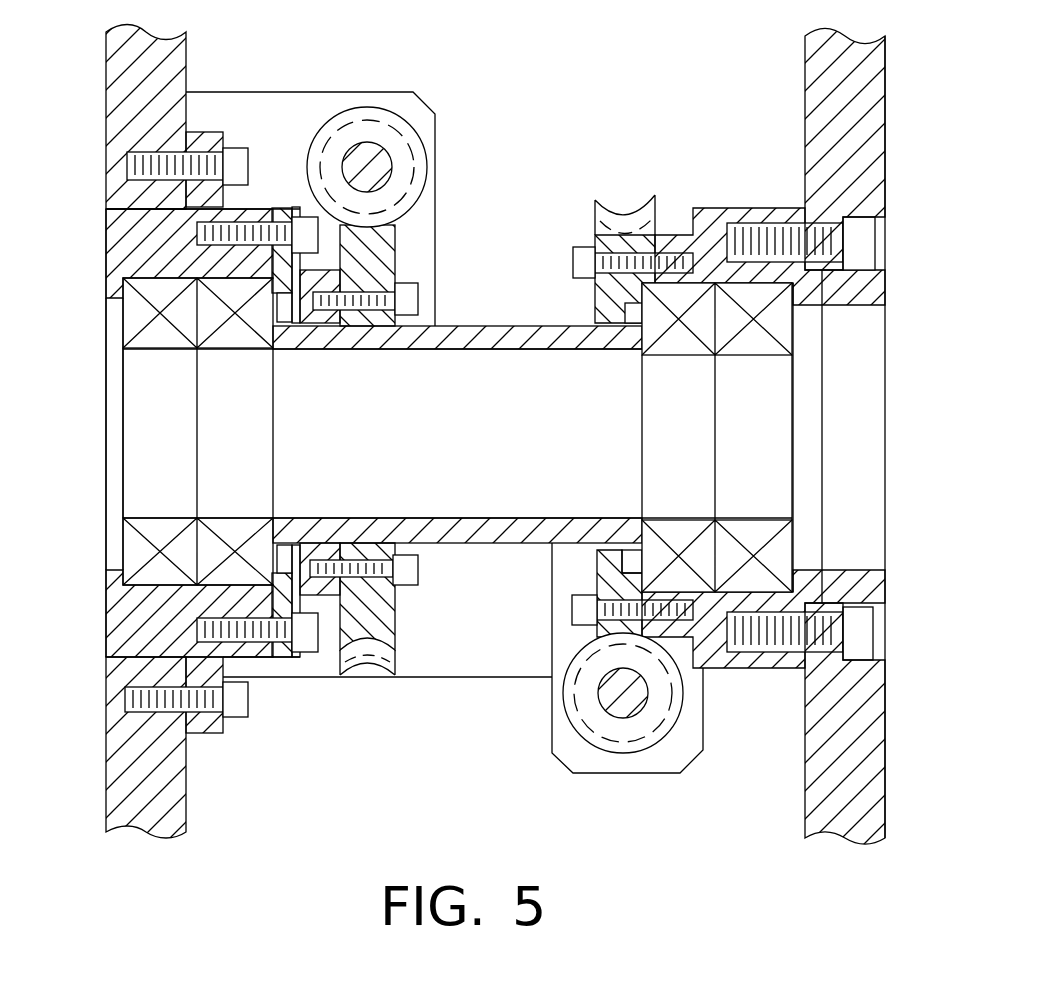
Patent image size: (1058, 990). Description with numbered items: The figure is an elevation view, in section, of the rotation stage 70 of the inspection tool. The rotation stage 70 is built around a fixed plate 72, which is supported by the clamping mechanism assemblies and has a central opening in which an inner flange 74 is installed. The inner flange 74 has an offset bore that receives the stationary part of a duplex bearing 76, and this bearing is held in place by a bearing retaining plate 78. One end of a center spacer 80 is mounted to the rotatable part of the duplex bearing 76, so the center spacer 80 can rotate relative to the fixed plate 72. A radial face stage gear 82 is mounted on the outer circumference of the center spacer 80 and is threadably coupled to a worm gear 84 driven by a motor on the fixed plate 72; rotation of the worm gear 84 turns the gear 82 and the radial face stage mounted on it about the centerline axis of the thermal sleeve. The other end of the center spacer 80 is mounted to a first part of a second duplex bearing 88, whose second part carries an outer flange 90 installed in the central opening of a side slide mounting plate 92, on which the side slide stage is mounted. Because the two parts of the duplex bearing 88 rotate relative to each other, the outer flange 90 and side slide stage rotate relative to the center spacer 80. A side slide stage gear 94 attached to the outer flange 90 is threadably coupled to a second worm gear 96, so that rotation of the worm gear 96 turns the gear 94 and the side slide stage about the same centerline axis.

The rotation stage 70 is at (640, 126).
The fixed plate 72 is at (188, 778).
The inner flange 74 is at (112, 605).
The duplex bearing 76 is at (162, 350).
The bearing retaining plate 78 is at (278, 207).
The center spacer 80 is at (522, 326).
The radial face stage gear 82 is at (397, 652).
The worm gear 84 is at (418, 138).
The duplex bearing 88 is at (721, 362).
The outer flange 90 is at (728, 207).
The side slide mounting plate 92 is at (805, 815).
The side slide stage gear 94 is at (593, 212).
The worm gear 96 is at (578, 736).